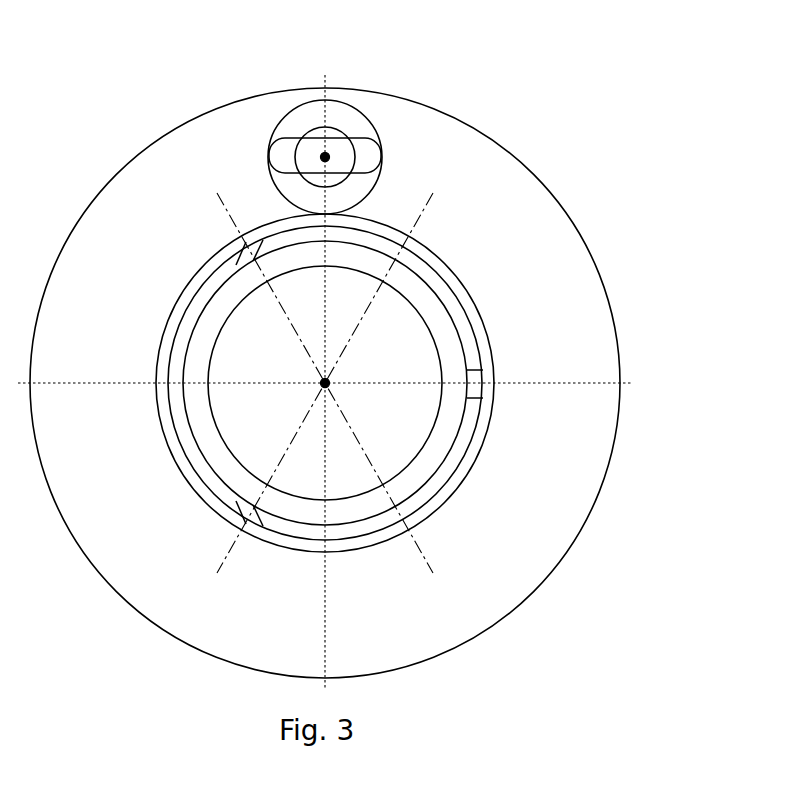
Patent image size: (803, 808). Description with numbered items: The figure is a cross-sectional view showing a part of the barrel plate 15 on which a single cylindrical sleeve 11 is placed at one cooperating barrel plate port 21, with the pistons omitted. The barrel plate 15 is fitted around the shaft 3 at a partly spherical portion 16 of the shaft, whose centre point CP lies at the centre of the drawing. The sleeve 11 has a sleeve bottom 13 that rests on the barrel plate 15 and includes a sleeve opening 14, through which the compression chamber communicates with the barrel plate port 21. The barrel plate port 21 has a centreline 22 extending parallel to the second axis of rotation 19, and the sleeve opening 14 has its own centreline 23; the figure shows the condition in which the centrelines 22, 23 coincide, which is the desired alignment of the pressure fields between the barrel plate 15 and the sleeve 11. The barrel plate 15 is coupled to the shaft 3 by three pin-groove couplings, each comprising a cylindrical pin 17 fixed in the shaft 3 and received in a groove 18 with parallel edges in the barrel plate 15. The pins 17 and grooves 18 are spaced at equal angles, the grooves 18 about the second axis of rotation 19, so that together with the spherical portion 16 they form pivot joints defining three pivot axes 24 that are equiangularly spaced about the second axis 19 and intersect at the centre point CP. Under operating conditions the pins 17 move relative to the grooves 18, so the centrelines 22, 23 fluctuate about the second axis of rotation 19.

The shaft 3 is at (395, 447).
The cylindrical sleeve 11 is at (343, 148).
The sleeve bottom 13 is at (338, 120).
The sleeve opening 14 is at (338, 137).
The barrel plate 15 is at (550, 210).
The partly spherical portion 16 is at (369, 488).
The pin 17 is at (485, 377).
The groove 18 is at (488, 362).
The second axis of rotation 19 is at (325, 383).
The barrel plate port 21 is at (347, 148).
The centreline of barrel plate port 22 is at (296, 104).
The centreline of sleeve opening 23 is at (268, 155).
The pivot axis 24 is at (412, 528).